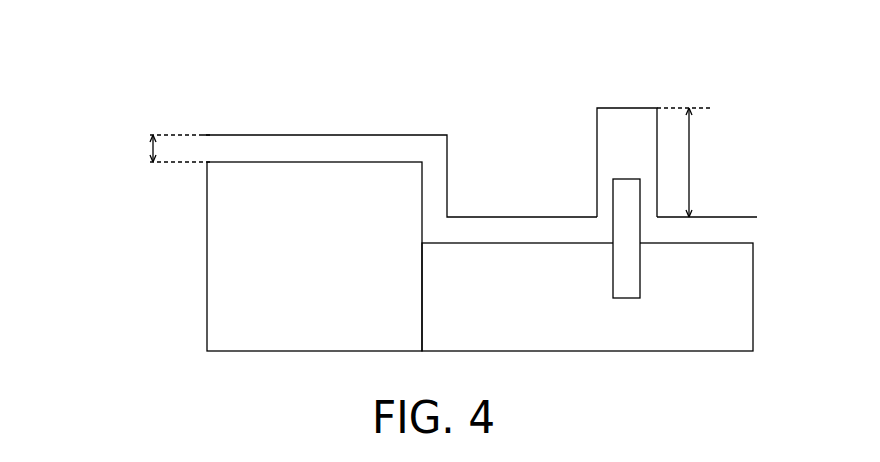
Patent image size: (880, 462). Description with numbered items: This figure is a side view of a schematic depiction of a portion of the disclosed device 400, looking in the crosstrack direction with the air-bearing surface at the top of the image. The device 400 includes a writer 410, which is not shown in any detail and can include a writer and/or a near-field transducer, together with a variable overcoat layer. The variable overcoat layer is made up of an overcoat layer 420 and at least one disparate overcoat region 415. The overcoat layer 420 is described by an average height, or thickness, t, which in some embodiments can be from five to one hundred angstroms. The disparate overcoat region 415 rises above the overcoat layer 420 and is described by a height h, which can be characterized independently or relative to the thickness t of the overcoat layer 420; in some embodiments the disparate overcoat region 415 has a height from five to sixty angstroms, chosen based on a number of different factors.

The device 400 is at (110, 102).
The writer 410 is at (622, 230).
The disparate overcoat region 415 is at (635, 133).
The overcoat layer 420 is at (283, 148).